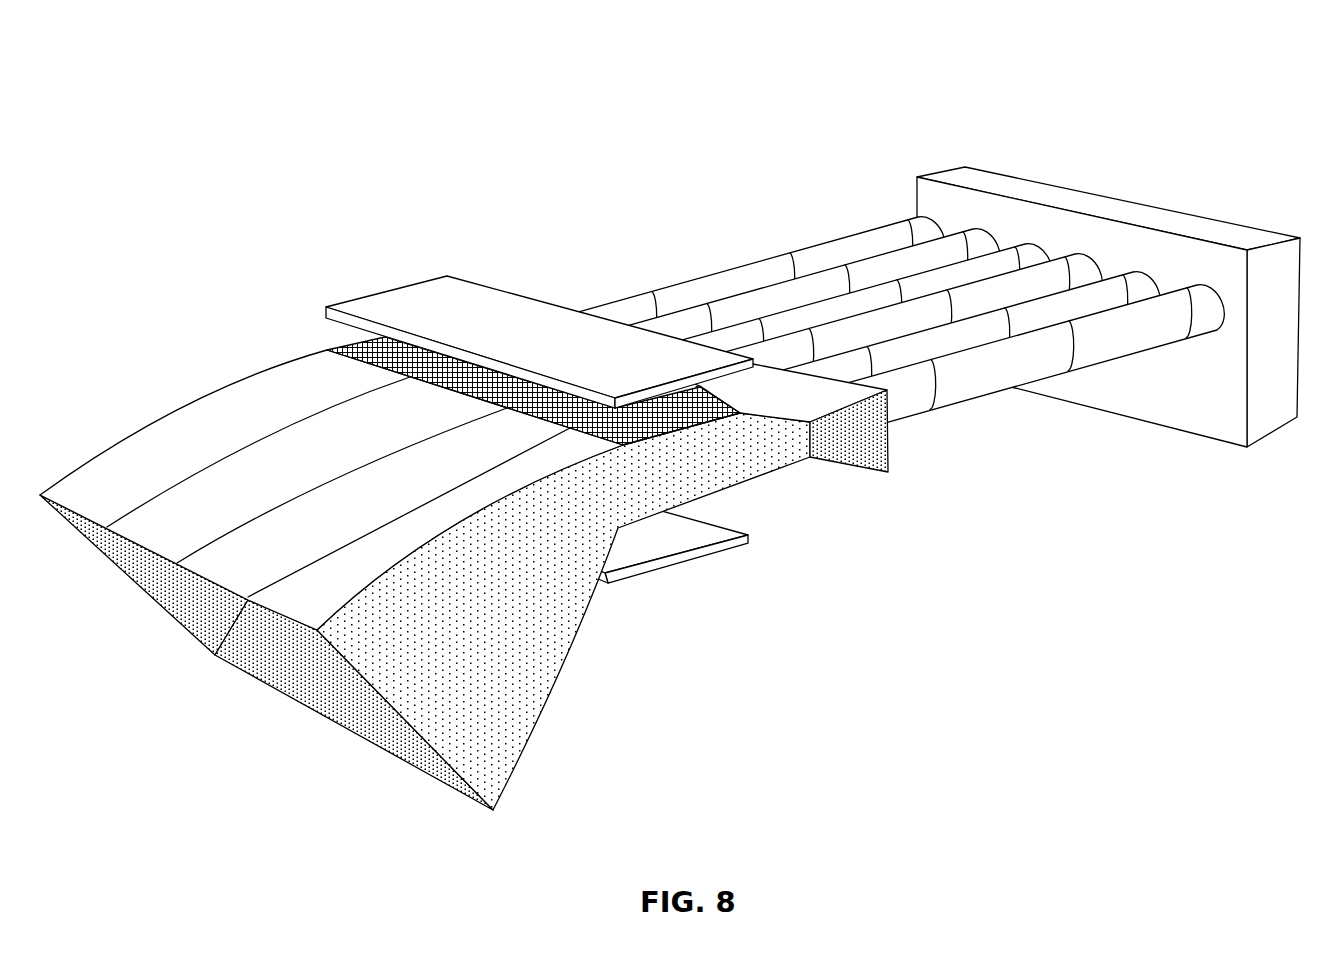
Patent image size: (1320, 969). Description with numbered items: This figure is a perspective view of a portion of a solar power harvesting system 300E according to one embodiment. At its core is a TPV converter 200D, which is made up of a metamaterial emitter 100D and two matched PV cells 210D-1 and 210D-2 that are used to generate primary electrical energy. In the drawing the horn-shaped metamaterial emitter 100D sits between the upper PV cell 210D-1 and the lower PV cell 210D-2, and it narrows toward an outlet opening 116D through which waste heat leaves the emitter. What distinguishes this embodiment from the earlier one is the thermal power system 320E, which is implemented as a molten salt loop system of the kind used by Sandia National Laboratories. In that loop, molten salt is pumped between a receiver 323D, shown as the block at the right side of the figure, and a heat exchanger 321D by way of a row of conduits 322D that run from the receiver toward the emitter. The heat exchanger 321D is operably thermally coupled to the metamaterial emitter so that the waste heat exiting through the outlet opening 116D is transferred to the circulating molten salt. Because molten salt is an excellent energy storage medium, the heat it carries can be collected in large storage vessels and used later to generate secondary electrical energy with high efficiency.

The thermal management system 300E is at (670, 424).
The thermal power system 320E is at (938, 339).
The conduits 322D is at (950, 338).
The receiver 323D is at (1136, 426).
The heat exchanger 321D is at (807, 449).
The outlet opening 116D is at (814, 466).
The metamaterial emitter 100D is at (538, 561).
The TPV converter 200D is at (446, 345).
The PV cell 210D-1 is at (400, 312).
The PV cell 210D-2 is at (660, 565).